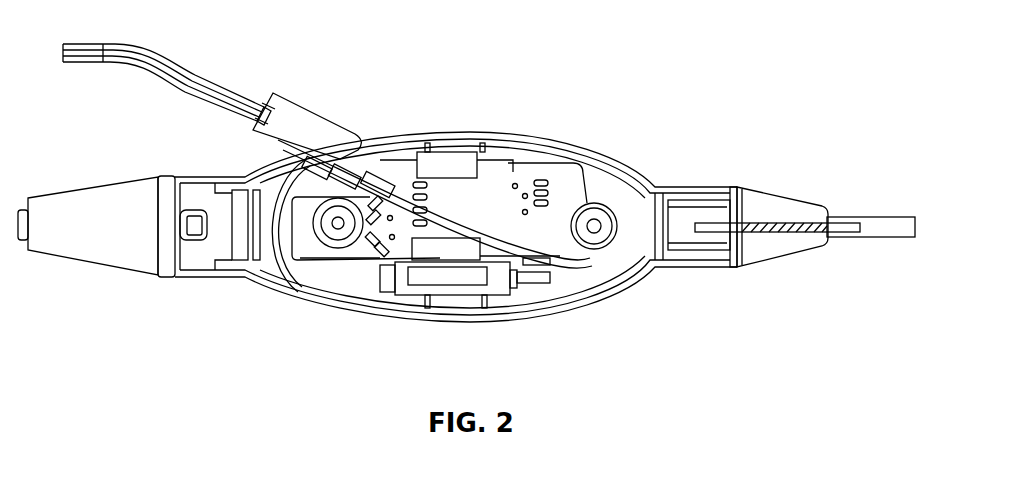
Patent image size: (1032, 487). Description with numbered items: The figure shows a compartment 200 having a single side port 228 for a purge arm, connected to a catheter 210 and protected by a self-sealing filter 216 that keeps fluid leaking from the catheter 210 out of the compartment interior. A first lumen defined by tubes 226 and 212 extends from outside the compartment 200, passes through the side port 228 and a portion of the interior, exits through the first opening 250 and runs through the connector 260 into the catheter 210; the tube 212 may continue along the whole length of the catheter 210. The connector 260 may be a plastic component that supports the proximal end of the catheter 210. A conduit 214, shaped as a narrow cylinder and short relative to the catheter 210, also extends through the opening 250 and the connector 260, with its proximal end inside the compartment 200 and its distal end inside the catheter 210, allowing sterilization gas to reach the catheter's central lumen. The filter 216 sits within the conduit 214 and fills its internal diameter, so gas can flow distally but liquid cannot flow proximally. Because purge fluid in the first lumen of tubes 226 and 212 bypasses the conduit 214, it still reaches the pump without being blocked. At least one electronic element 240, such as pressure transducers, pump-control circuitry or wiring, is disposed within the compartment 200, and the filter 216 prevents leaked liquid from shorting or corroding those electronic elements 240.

The compartment 200 is at (745, 338).
The catheter 210 is at (897, 225).
The tube 212 is at (478, 226).
The conduit 214 is at (718, 233).
The filter 216 is at (792, 237).
The tube 226 is at (205, 70).
The side port 228 is at (364, 140).
The electronic element 240 is at (540, 207).
The first opening 250 is at (738, 187).
The connector 260 is at (760, 266).